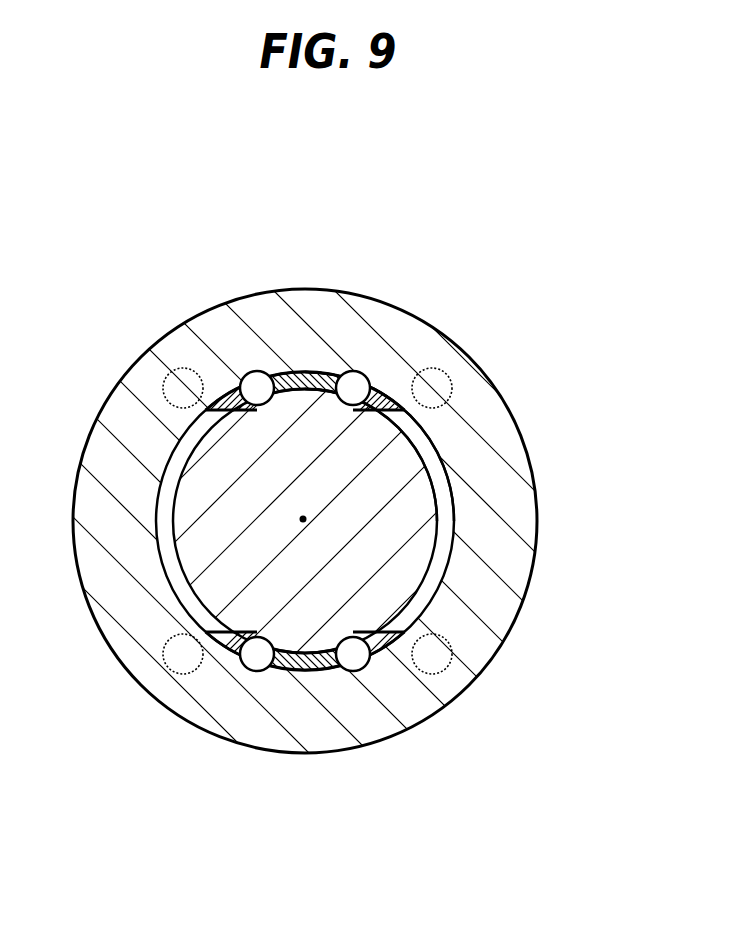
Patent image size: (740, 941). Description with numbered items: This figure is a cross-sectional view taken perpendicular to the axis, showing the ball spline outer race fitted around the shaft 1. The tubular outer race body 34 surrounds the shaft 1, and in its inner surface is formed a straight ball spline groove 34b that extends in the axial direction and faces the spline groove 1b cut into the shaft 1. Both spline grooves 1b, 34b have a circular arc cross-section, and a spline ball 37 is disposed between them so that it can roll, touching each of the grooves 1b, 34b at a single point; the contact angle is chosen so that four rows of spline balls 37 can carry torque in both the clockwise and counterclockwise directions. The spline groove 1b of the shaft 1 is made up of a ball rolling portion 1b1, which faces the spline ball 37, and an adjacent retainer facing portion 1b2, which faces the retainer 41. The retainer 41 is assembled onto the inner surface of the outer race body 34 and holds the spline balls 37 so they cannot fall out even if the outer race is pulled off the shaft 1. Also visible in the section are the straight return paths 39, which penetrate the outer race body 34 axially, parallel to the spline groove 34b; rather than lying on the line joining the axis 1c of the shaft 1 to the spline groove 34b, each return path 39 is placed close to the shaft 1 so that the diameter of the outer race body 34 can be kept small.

The shaft 1 is at (166, 468).
The spline groove 1b is at (614, 413).
The ball rolling portion 1b1 is at (340, 445).
The retainer facing portion 1b2 is at (347, 410).
The axis 1c is at (303, 519).
The outer race body 34 is at (425, 323).
The ball spline groove 34b is at (242, 382).
The spline ball 37 is at (345, 395).
The return path 39 is at (166, 372).
The retainer 41 is at (395, 406).